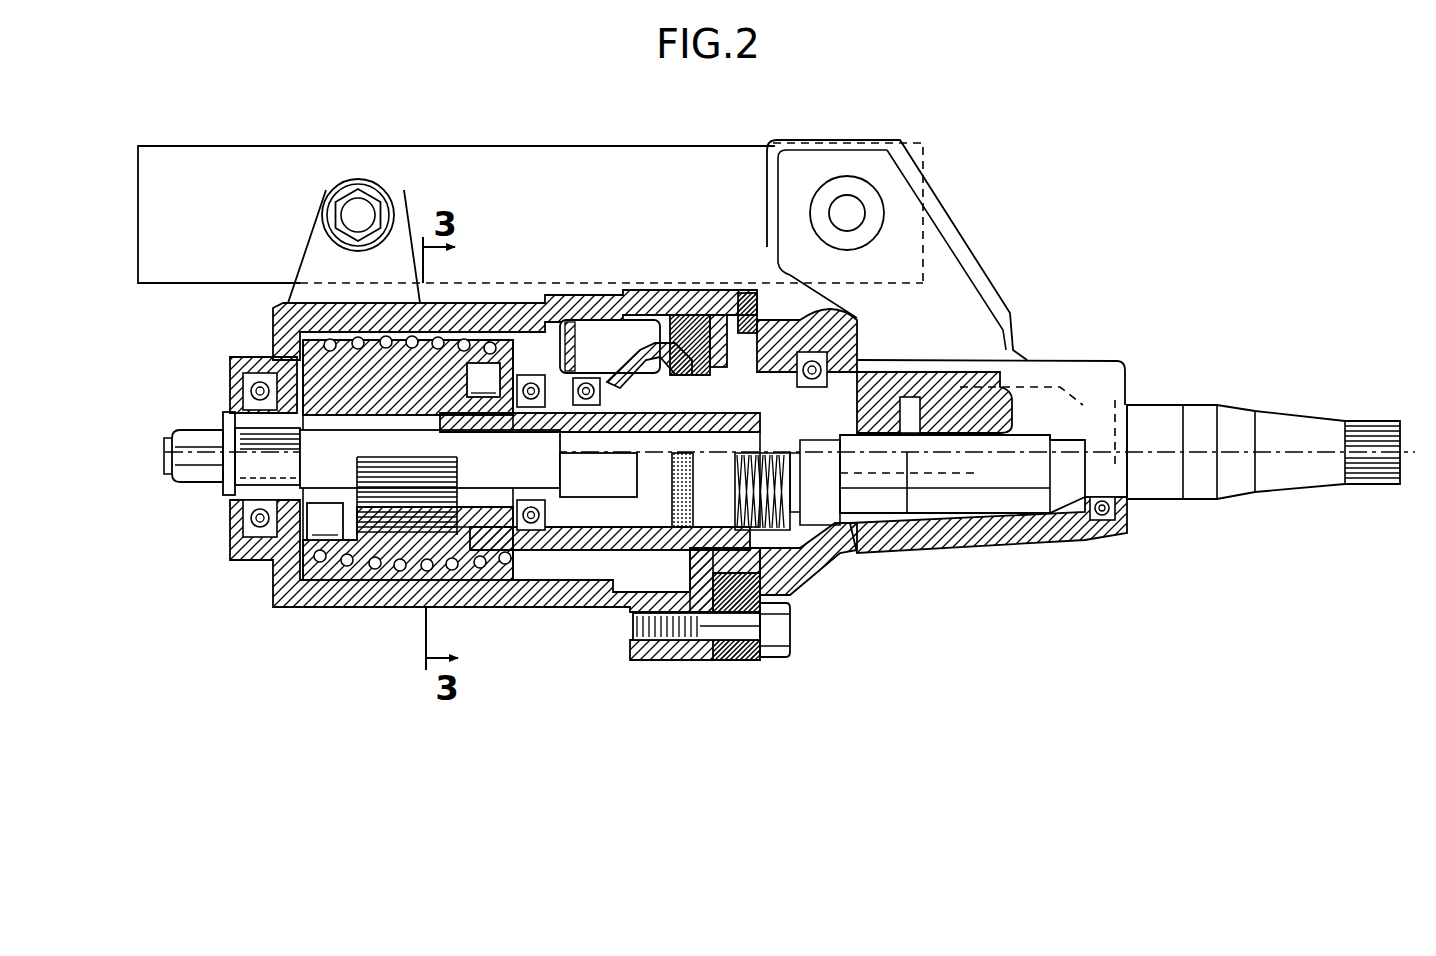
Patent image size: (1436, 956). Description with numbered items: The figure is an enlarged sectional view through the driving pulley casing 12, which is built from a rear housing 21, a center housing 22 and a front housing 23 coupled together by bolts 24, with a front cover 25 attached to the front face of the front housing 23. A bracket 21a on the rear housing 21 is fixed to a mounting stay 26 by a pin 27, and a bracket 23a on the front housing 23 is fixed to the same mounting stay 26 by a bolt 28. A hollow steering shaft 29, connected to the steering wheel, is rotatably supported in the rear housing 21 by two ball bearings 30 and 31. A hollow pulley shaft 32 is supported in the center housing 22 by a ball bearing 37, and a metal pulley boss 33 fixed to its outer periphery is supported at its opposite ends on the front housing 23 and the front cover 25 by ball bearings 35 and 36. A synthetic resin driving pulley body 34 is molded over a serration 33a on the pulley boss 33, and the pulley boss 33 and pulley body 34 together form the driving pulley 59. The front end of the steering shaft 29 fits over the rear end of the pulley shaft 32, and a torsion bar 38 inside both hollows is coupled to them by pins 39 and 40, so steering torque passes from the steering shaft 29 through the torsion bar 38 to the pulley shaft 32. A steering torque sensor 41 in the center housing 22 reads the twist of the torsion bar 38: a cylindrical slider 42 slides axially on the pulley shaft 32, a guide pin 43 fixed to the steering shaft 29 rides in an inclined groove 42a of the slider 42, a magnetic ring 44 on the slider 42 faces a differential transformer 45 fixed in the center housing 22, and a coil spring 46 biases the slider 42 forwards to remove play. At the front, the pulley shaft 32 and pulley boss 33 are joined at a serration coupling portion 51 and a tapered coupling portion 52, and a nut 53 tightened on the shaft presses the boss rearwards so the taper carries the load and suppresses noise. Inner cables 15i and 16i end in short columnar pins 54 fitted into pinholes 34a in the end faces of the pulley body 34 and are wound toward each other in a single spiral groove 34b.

The driving pulley casing 12 is at (577, 624).
The inner cable 15i is at (332, 343).
The inner cable 16i is at (537, 590).
The rear housing 21 is at (1012, 542).
The bracket 21a is at (942, 243).
The center housing 22 is at (717, 657).
The front housing 23 is at (508, 608).
The bracket 23a is at (312, 248).
The bolt 24 is at (788, 627).
The front cover 25 is at (273, 577).
The mounting stay 26 is at (567, 147).
The pin 27 is at (843, 214).
The bolt 28 is at (360, 213).
The steering shaft 29 is at (998, 491).
The ball bearing 30 is at (1103, 522).
The ball bearing 31 is at (827, 317).
The pulley shaft 32 is at (408, 377).
The pulley boss 33 is at (408, 481).
The serration 33a is at (405, 465).
The driving pulley body 34 is at (290, 345).
The pinhole 34a is at (497, 343).
The spiral groove 34b is at (375, 577).
The ball bearing 35 is at (540, 330).
The ball bearing 36 is at (262, 380).
The ball bearing 37 is at (593, 378).
The torsion bar 38 is at (612, 376).
The pin 39 is at (912, 398).
The pin 40 is at (598, 475).
The steering torque sensor 41 is at (660, 575).
The slider 42 is at (652, 395).
The inclined groove 42a is at (727, 388).
The guide pin 43 is at (830, 372).
The magnetic ring 44 is at (673, 340).
The differential transformer 45 is at (698, 522).
The coil spring 46 is at (805, 560).
The serration coupling portion 51 is at (245, 410).
The tapered coupling portion 52 is at (520, 392).
The nut 53 is at (218, 488).
The columnar pin 54 is at (403, 451).
The driving pulley 59 is at (452, 323).